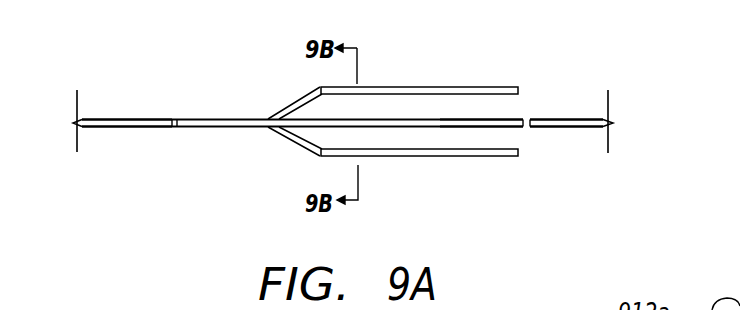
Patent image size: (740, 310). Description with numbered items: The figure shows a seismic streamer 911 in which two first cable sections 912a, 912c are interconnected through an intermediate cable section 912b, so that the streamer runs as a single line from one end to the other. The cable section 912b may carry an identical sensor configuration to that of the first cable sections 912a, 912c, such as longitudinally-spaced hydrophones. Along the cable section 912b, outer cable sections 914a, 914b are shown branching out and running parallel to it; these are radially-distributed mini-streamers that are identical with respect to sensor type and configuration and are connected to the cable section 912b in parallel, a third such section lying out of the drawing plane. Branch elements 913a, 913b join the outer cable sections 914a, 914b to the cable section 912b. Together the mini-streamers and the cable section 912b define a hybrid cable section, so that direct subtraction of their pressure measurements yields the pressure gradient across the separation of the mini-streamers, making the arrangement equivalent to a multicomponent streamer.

The seismic streamer 911 is at (248, 134).
The first cable section 912a is at (100, 128).
The cable section 912b is at (507, 128).
The first cable section 912c is at (538, 118).
The upper branch arm 913a is at (290, 105).
The lower branch arm 913b is at (299, 147).
The outer cable section 914a is at (398, 86).
The outer cable section 914b is at (410, 158).